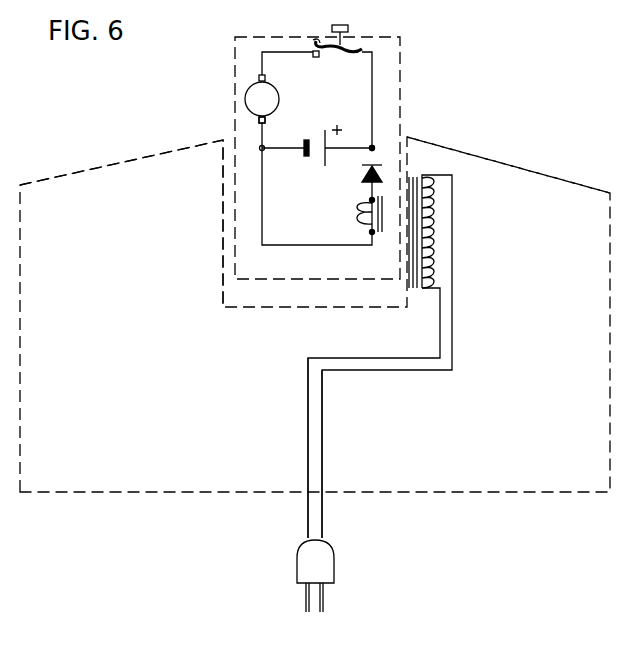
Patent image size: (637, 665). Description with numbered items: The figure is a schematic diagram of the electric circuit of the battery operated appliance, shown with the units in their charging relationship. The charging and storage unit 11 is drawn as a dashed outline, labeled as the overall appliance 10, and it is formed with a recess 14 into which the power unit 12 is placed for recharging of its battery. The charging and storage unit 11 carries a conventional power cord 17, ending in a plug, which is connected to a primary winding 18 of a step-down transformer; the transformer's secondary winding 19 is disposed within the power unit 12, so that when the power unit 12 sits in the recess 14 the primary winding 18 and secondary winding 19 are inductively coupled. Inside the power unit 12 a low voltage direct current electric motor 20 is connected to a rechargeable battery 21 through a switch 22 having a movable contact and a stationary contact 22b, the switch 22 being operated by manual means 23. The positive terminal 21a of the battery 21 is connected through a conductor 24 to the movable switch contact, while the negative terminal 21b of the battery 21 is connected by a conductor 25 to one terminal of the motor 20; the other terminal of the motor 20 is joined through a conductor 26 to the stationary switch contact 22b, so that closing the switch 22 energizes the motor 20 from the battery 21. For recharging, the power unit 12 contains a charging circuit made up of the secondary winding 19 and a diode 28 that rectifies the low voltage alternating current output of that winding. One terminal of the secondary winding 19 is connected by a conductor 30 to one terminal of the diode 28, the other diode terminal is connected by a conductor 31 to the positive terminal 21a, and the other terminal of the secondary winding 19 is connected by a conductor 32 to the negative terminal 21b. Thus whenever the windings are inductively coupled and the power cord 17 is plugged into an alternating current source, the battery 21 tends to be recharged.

The housing 10 is at (206, 551).
The charging and storage unit 11 is at (448, 148).
The power unit 12 is at (400, 78).
The recess 14 is at (228, 140).
The power cord 17 is at (323, 460).
The primary winding 18 is at (430, 230).
The secondary winding 19 is at (358, 218).
The electric motor 20 is at (245, 98).
The rechargeable battery 21 is at (318, 132).
The positive terminal 21a is at (370, 147).
The negative terminal 21b is at (265, 150).
The switch 22 is at (312, 45).
The stationary contact 22b is at (318, 57).
The manual means 23 is at (345, 27).
The conductor 24 is at (372, 78).
The conductor 25 is at (264, 146).
The conductor 26 is at (273, 52).
The diode 28 is at (378, 165).
The conductor 30 is at (374, 194).
The conductor 31 is at (374, 150).
The conductor 32 is at (263, 222).